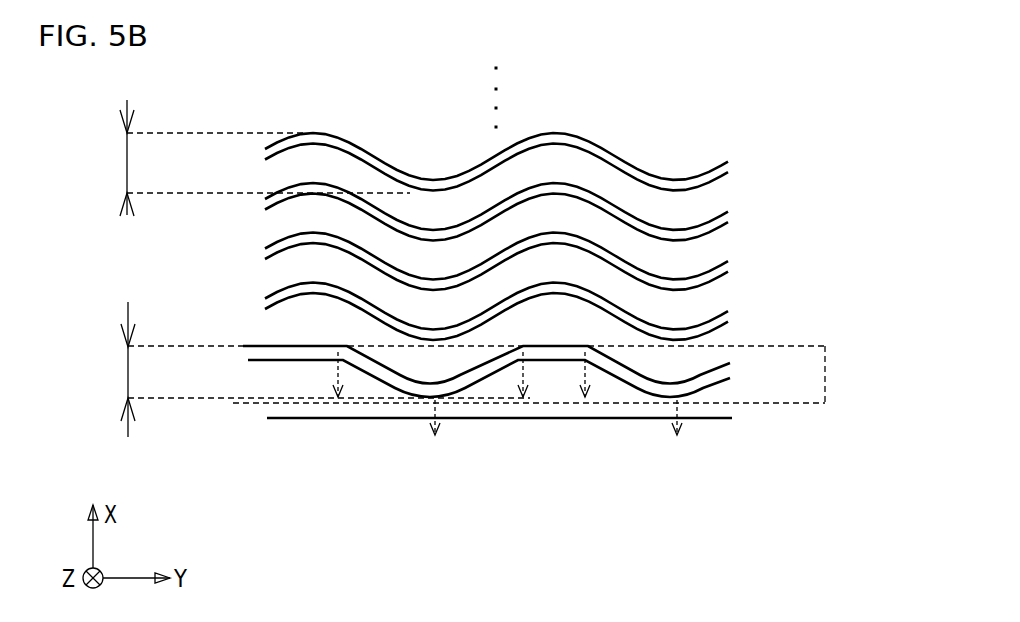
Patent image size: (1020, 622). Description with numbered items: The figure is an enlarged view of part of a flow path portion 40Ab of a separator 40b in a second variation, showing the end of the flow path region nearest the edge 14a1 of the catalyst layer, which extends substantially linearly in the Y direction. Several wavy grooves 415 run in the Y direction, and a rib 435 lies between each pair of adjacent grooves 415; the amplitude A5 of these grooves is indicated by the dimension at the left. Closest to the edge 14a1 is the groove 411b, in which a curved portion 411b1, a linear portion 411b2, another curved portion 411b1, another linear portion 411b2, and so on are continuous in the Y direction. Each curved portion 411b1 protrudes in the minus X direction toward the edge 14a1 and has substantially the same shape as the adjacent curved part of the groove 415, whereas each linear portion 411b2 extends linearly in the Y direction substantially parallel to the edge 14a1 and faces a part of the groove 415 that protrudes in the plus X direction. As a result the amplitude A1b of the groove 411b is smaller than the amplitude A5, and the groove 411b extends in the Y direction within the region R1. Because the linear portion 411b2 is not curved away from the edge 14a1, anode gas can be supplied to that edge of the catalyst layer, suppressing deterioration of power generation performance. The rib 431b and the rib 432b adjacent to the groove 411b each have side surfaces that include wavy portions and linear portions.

The separator 40b is at (748, 100).
The flow path portion 40Ab is at (840, 170).
The groove 415 is at (730, 160).
The rib 435 is at (277, 171).
The rib 432b is at (277, 328).
The rib 431b is at (269, 375).
The groove 411b is at (722, 368).
The curved portion 411b1 is at (447, 390).
The linear portion 411b2 is at (340, 356).
The edge 14a1 is at (722, 420).
The region R1 is at (497, 374).
The amplitude A5 is at (250, 158).
The amplitude A1b is at (301, 369).